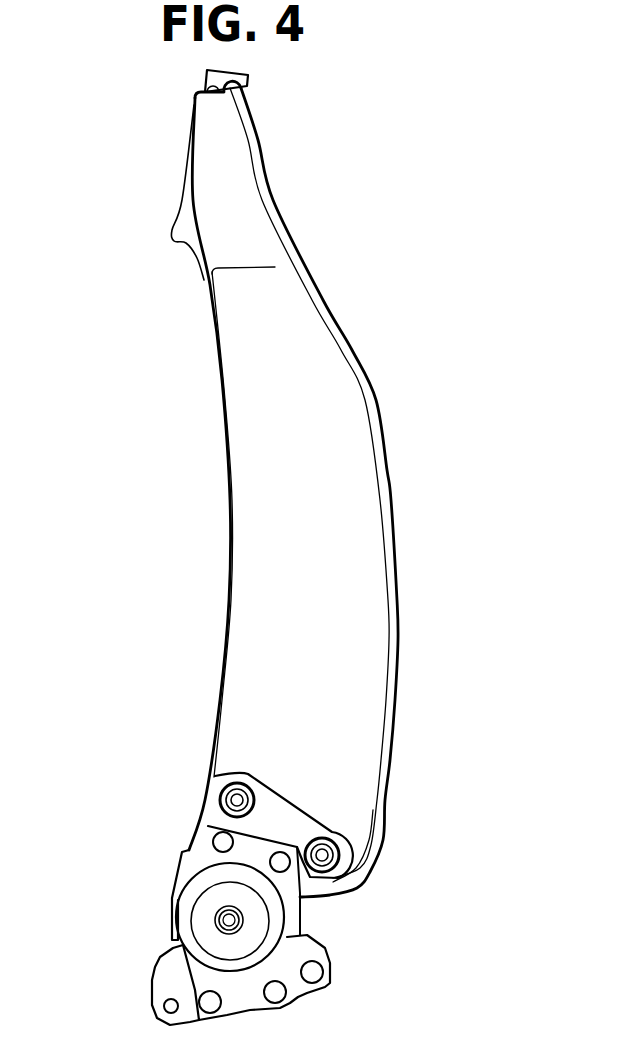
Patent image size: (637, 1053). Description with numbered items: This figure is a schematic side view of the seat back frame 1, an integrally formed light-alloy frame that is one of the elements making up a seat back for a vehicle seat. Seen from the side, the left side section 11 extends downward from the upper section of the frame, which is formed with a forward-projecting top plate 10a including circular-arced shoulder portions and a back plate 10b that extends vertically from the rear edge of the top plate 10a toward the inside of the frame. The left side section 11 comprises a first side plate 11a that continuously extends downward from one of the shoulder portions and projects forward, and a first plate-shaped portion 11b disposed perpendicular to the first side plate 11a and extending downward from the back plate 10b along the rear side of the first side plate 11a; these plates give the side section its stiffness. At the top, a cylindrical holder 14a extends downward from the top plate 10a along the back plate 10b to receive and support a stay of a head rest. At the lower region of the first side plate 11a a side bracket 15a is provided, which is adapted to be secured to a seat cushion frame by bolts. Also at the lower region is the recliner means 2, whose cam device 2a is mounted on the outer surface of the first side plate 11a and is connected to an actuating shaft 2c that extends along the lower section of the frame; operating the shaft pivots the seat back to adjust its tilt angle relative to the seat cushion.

The seat back frame 1 is at (305, 187).
The left side section 11 is at (390, 471).
The first side plate 11a is at (334, 571).
The first plate-shaped portion 11b is at (223, 577).
The top plate 10a is at (207, 91).
The back plate 10b is at (185, 195).
The cylindrical holder 14a is at (228, 70).
The recliner means 2 is at (178, 847).
The cam device 2a is at (207, 915).
The actuating shaft 2c is at (233, 920).
The side bracket 15a is at (168, 974).